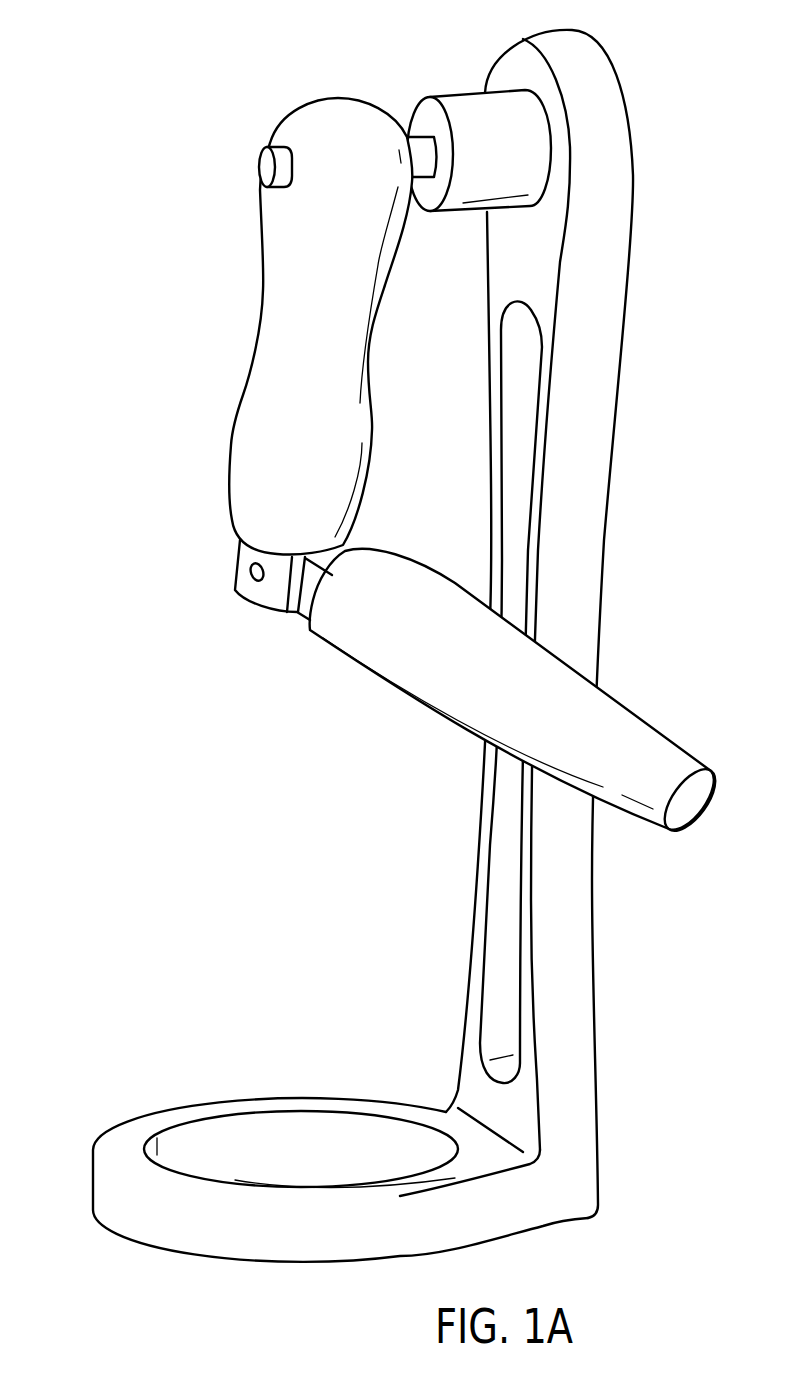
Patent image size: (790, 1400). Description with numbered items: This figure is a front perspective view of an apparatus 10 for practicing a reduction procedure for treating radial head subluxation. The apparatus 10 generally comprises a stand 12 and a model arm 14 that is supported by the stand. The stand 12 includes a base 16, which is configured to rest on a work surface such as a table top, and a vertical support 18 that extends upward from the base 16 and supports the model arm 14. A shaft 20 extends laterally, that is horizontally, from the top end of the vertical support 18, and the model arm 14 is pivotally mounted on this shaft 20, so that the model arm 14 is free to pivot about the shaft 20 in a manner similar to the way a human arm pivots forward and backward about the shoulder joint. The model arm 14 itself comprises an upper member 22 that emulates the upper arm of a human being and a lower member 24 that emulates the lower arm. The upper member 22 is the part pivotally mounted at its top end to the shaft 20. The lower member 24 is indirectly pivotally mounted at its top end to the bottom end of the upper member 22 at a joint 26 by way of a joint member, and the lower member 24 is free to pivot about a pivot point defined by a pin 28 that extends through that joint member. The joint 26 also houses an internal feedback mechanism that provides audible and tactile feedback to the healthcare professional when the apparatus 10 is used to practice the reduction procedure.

The apparatus 10 is at (385, 639).
The stand 12 is at (377, 646).
The model arm 14 is at (412, 463).
The base 16 is at (113, 1137).
The vertical support 18 is at (568, 970).
The shaft 20 is at (262, 168).
The upper member 22 is at (247, 430).
The lower member 24 is at (383, 678).
The joint 26 is at (233, 604).
The pin 28 is at (252, 568).